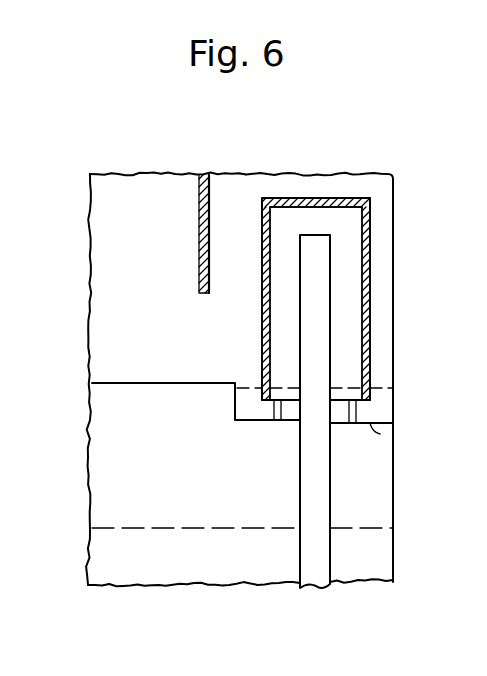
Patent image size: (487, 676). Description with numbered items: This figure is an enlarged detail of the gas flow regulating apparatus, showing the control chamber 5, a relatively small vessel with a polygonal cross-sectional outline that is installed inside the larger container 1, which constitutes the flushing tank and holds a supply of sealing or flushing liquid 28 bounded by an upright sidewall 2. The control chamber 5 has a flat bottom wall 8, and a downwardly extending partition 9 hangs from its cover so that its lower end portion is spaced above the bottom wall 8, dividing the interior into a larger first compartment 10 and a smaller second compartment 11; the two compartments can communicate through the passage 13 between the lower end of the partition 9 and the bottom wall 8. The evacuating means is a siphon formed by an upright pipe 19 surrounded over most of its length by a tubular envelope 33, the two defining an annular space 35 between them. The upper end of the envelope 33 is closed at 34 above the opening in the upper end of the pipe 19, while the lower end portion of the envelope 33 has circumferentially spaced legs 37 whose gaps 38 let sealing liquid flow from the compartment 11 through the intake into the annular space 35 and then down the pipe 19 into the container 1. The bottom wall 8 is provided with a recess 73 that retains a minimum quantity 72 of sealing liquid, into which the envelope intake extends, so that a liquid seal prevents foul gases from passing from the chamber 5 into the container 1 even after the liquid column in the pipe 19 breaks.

The container 1 is at (130, 485).
The upright sidewall 2 is at (394, 297).
The control chamber 5 is at (341, 249).
The bottom wall 8 is at (166, 385).
The partition 9 is at (198, 246).
The first compartment 10 is at (140, 190).
The second compartment 11 is at (242, 183).
The passage 13 is at (200, 341).
The upright pipe 19 is at (318, 486).
The sealing or flushing liquid 28 is at (196, 572).
The tubular envelope 33 is at (366, 240).
The closed upper end of envelope 34 is at (348, 205).
The annular space 35 is at (348, 338).
The legs 37 is at (274, 412).
The gaps 38 is at (292, 423).
The minimum quantity of sealing liquid 72 is at (378, 409).
The recess 73 is at (372, 425).